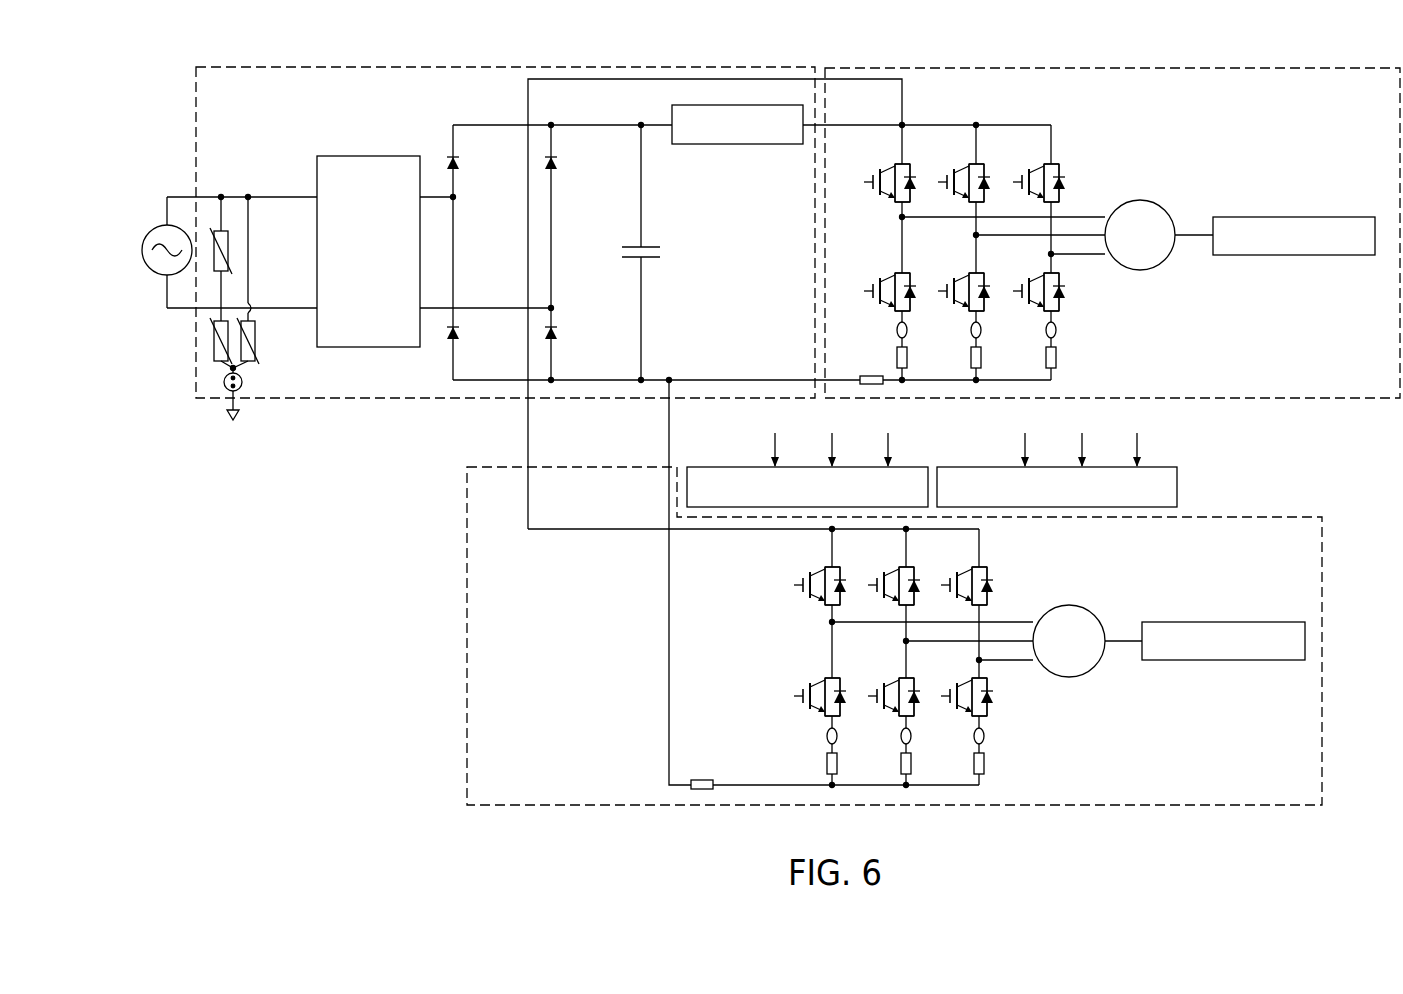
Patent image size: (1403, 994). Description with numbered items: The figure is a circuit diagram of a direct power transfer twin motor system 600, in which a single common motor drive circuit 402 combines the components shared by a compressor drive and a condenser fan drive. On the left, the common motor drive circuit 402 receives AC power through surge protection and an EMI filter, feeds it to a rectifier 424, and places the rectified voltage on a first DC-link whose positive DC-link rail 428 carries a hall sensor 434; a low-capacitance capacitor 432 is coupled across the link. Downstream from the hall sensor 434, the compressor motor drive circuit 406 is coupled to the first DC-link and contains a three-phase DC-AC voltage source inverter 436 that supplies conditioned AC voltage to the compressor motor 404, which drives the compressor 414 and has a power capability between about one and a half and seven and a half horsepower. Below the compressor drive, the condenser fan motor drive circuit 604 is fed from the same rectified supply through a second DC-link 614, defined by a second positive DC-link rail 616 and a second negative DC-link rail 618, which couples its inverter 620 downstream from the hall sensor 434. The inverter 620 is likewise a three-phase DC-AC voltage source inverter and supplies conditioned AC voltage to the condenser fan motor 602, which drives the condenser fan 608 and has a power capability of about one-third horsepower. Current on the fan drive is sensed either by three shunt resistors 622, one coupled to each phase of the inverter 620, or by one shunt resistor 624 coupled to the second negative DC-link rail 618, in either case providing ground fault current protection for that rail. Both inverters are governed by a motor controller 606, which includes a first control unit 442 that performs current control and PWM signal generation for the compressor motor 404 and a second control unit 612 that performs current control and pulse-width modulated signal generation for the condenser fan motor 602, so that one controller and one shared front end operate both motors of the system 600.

The direct power transfer twin motor system 600 is at (425, 36).
The common motor drive circuit 402 is at (257, 67).
The rectifier 424 is at (497, 117).
The positive DC-link rail 428 is at (572, 125).
The low-capacitance capacitor 432 is at (650, 247).
The hall sensor 434 is at (703, 144).
The compressor motor drive circuit 406 is at (1138, 68).
The inverter 436 is at (1000, 115).
The compressor motor 404 is at (1140, 200).
The compressor 414 is at (1268, 217).
The motor controller 606 is at (1218, 432).
The first control unit 442 is at (742, 467).
The second control unit 612 is at (1005, 467).
The condenser fan motor drive circuit 604 is at (466, 610).
The second DC-link 614 is at (725, 766).
The second positive DC-link rail 616 is at (808, 530).
The second negative DC-link rail 618 is at (745, 785).
The inverter 620 is at (993, 553).
The shunt resistors 622 is at (838, 757).
The shunt resistor 624 is at (703, 790).
The condenser fan motor 602 is at (1072, 605).
The condenser fan 608 is at (1188, 622).